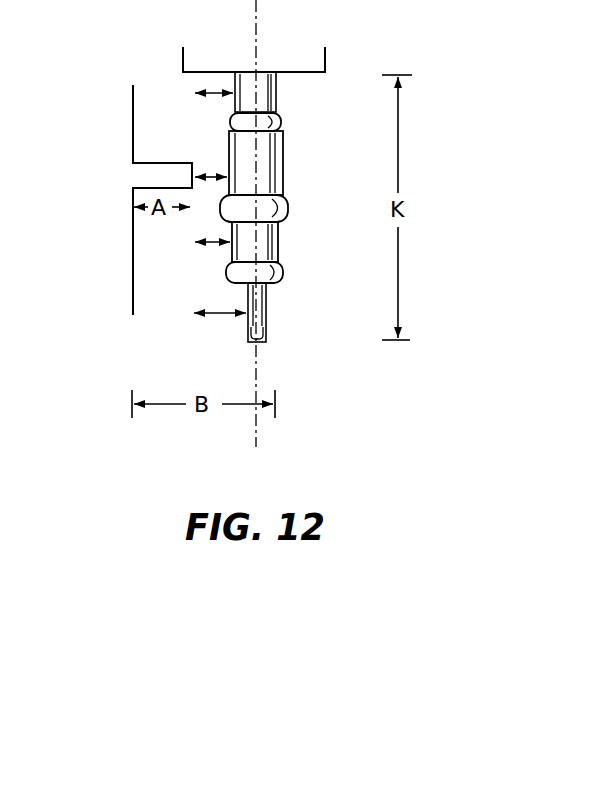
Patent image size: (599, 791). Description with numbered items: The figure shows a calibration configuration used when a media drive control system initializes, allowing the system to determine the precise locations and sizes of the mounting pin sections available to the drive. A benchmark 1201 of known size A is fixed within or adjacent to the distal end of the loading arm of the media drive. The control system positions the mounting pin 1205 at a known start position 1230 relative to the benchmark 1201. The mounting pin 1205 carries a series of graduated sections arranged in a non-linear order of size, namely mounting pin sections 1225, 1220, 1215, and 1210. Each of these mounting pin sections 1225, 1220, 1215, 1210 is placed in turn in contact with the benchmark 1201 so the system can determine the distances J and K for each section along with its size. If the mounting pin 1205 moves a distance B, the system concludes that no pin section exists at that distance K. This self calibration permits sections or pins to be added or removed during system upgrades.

The benchmark 1201 is at (158, 177).
The mounting pin 1205 is at (290, 72).
The mounting pin section 1210 is at (277, 90).
The mounting pin section 1215 is at (283, 150).
The mounting pin section 1220 is at (278, 233).
The mounting pin section 1225 is at (268, 302).
The known start position 1230 is at (254, 430).